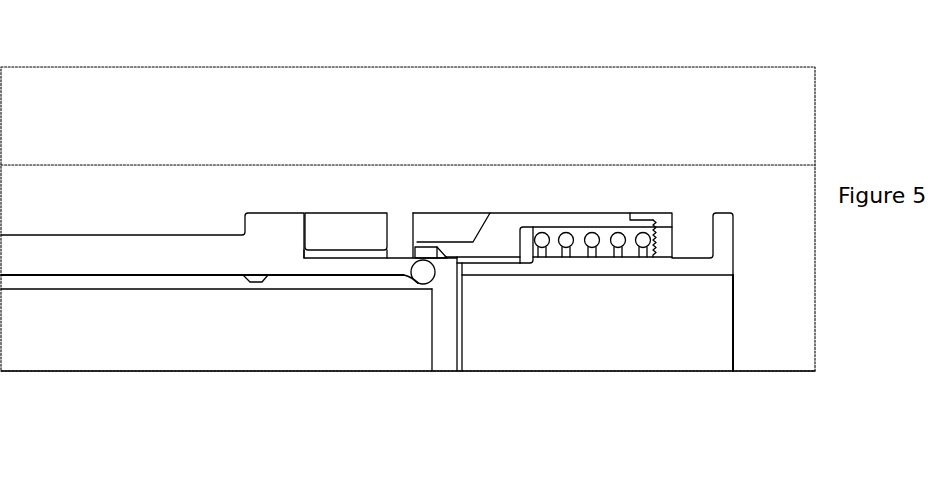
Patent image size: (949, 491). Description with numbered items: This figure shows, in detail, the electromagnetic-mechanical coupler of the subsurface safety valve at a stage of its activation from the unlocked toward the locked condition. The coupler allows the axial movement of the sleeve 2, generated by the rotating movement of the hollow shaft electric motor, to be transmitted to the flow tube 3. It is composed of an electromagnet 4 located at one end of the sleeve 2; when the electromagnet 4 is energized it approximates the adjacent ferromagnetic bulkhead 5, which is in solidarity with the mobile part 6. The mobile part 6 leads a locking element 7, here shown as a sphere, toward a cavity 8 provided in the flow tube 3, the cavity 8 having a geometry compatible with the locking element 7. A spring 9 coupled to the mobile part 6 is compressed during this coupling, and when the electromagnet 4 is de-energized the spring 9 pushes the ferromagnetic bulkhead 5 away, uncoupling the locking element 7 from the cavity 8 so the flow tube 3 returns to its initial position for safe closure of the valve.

The sleeve 2 is at (630, 313).
The flow tube 3 is at (352, 281).
The electromagnet 4 is at (368, 222).
The ferromagnetic bulkhead 5 is at (447, 227).
The mobile part 6 is at (582, 223).
The locking element 7 is at (423, 272).
The cavity 8 is at (255, 289).
The spring 9 is at (593, 242).